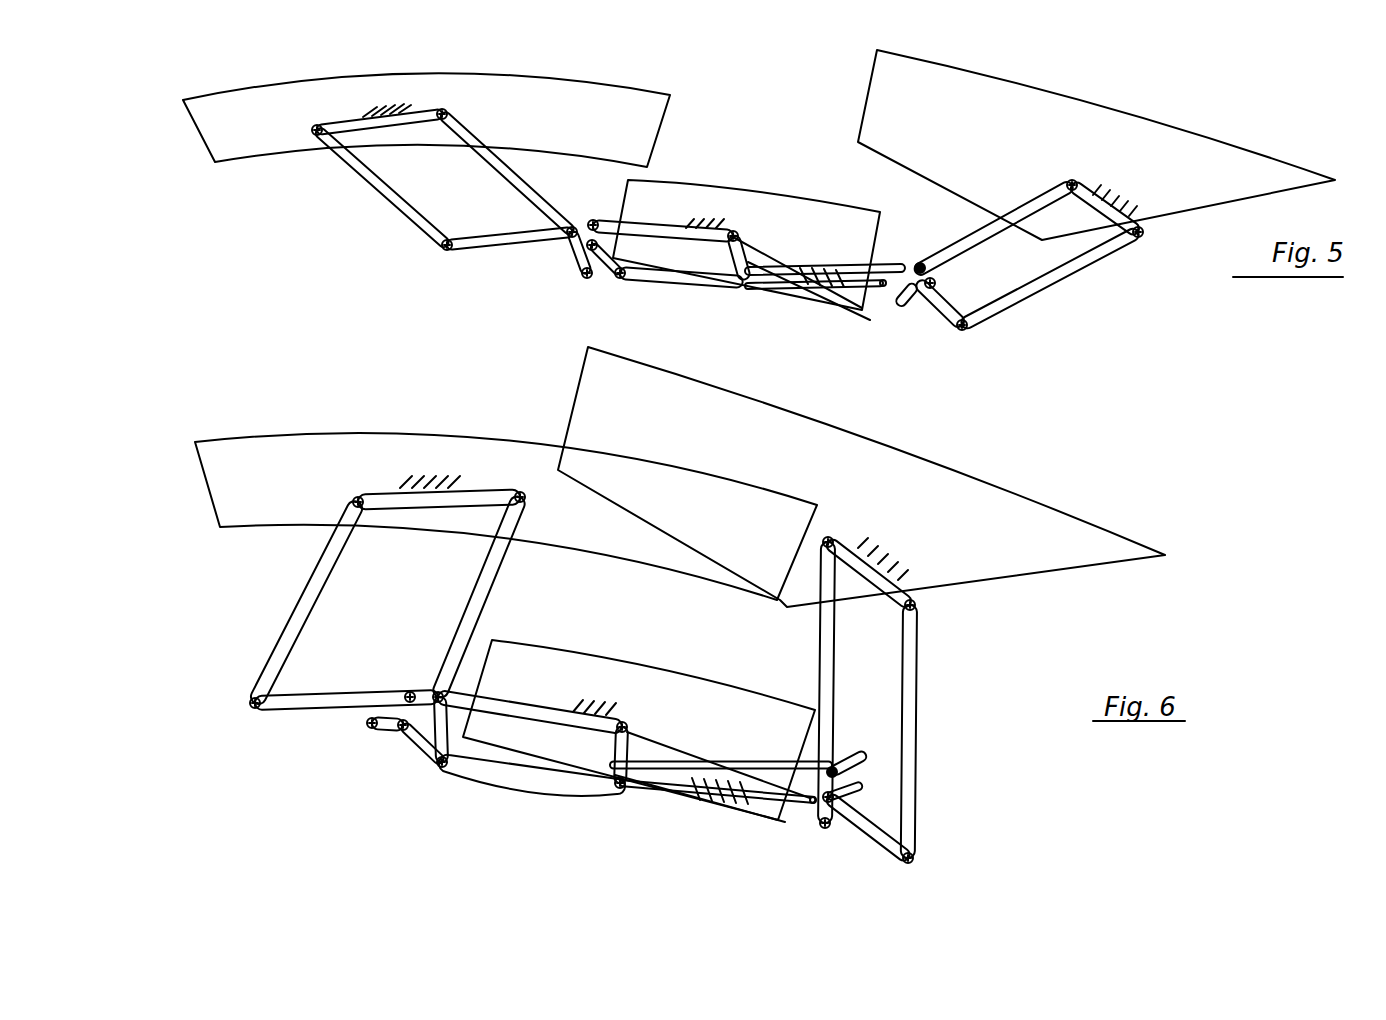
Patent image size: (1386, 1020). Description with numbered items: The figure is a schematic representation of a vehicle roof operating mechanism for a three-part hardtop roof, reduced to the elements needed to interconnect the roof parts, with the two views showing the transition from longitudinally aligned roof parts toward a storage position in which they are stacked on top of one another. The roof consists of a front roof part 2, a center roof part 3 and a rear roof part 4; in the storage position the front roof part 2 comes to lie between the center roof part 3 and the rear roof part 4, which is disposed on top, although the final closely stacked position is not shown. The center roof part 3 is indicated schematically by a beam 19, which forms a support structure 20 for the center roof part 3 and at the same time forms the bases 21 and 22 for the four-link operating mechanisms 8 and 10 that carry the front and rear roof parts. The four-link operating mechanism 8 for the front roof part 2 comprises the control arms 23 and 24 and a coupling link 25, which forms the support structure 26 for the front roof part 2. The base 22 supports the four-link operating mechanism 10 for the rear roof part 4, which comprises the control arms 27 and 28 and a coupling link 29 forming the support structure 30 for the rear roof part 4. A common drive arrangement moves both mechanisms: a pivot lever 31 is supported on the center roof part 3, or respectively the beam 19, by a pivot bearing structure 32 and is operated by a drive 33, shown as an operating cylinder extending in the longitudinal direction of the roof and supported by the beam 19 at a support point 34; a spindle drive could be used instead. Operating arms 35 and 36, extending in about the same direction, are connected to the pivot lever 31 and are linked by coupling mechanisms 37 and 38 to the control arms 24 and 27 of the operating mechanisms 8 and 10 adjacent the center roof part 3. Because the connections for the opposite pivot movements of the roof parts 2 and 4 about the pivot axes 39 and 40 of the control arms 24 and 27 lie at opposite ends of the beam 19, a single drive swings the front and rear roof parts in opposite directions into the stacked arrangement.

In FIG. 5, the front roof part 2 is at (203, 132).
In FIG. 6, the front roof part 2 is at (232, 473).
In FIG. 5, the center roof part 3 is at (848, 233).
In FIG. 6, the center roof part 3 is at (762, 732).
In FIG. 5, the rear roof part 4 is at (1211, 183).
In FIG. 6, the rear roof part 4 is at (1046, 557).
In FIG. 5, the four-link operating mechanism 8 is at (428, 168).
In FIG. 6, the four-link operating mechanism 8 is at (358, 601).
In FIG. 5, the four-link operating mechanism 10 is at (1030, 262).
In FIG. 6, the four-link operating mechanism 10 is at (891, 705).
In FIG. 5, the beam 19 is at (779, 252).
In FIG. 6, the beam 19 is at (509, 696).
In FIG. 5, the support structure 20 is at (718, 222).
In FIG. 6, the support structure 20 is at (614, 710).
In FIG. 5, the base 21 is at (495, 238).
In FIG. 6, the base 21 is at (308, 697).
In FIG. 5, the base 22 is at (942, 312).
In FIG. 6, the base 22 is at (888, 840).
In FIG. 5, the control arm 23 is at (357, 163).
In FIG. 6, the control arm 23 is at (310, 597).
In FIG. 5, the control arm 24 is at (465, 132).
In FIG. 6, the control arm 24 is at (482, 573).
In FIG. 5, the coupling link 25 is at (418, 112).
In FIG. 5, the support structure 26 is at (363, 110).
In FIG. 6, the support structure 26 is at (418, 473).
In FIG. 5, the control arm 27 is at (983, 233).
In FIG. 6, the control arm 27 is at (826, 627).
In FIG. 5, the control arm 28 is at (1028, 292).
In FIG. 6, the control arm 28 is at (912, 647).
In FIG. 5, the coupling link 29 is at (1095, 200).
In FIG. 5, the support structure 30 is at (1112, 197).
In FIG. 6, the support structure 30 is at (887, 563).
In FIG. 5, the pivot lever 31 is at (742, 262).
In FIG. 5, the pivot bearing structure 32 is at (738, 232).
In FIG. 5, the drive 33 is at (801, 278).
In FIG. 6, the drive 33 is at (738, 806).
In FIG. 5, the support point 34 is at (815, 284).
In FIG. 6, the support point 34 is at (777, 820).
In FIG. 6, the operating arm 35 is at (503, 767).
In FIG. 5, the operating arm 36 is at (825, 269).
In FIG. 6, the operating arm 36 is at (677, 770).
In FIG. 5, the coupling mechanism 37 is at (585, 284).
In FIG. 6, the coupling mechanism 37 is at (397, 742).
In FIG. 5, the coupling mechanism 38 is at (908, 303).
In FIG. 6, the coupling mechanism 38 is at (809, 819).
In FIG. 6, the pivot axis 39 is at (410, 697).
In FIG. 6, the pivot axis 40 is at (840, 797).